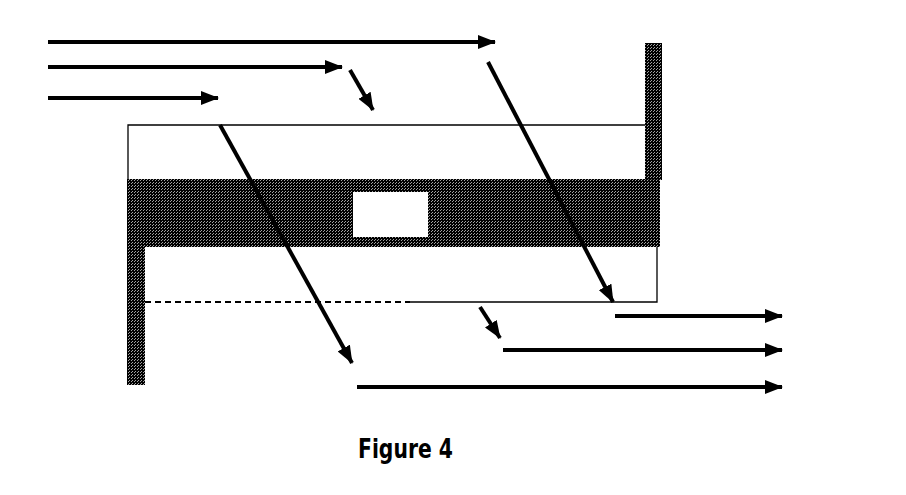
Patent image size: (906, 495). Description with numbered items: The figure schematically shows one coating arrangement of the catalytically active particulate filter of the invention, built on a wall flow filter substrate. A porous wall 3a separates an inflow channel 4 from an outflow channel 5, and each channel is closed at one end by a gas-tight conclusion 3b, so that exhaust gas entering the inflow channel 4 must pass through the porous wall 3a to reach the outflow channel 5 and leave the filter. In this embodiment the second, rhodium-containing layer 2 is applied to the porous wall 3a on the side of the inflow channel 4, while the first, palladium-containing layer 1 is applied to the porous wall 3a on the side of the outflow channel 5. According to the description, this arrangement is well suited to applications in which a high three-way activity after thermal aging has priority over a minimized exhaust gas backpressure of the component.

The first, palladium-containing layer 1 is at (401, 274).
The second, rhodium-containing layer 2 is at (386, 152).
The porous wall of a wall flow filter substrate 3a is at (393, 213).
The gas-tight conclusion of the flow channels 3b is at (657, 103).
The inflow channel 4 is at (330, 202).
The outflow channel 5 is at (495, 347).